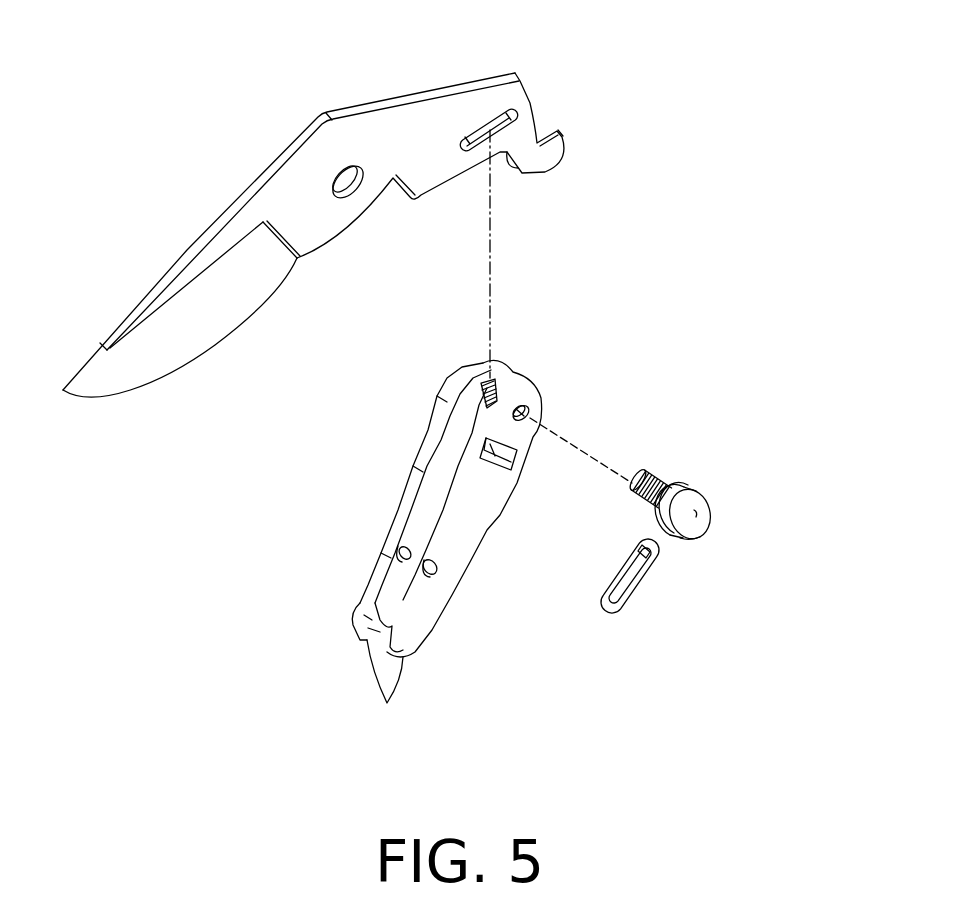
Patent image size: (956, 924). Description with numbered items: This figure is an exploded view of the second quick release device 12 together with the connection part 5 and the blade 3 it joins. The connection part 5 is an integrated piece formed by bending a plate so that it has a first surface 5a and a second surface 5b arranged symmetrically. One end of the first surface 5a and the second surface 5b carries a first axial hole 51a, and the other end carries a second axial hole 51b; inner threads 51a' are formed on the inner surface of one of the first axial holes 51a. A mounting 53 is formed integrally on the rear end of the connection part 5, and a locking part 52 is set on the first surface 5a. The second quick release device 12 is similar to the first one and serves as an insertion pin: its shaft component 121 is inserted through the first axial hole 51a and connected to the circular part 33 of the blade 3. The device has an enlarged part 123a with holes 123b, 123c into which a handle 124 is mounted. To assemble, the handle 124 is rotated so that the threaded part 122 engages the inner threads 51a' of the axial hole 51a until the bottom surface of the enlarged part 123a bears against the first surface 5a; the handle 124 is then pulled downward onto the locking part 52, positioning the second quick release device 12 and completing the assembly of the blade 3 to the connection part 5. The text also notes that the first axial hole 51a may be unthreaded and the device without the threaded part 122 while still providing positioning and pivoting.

The blade 3 is at (313, 203).
The circular part 33 is at (491, 127).
The connection part 5 is at (466, 513).
The first surface 5a is at (467, 553).
The second surface 5b is at (420, 468).
The first axial hole 51a is at (550, 373).
The inner threads 51a' is at (514, 352).
The second axial hole 51b is at (430, 558).
The locking part 52 is at (515, 463).
The mounting 53 is at (377, 666).
The second quick release device 12 is at (659, 553).
The shaft component 121 is at (677, 487).
The threaded part 122 is at (632, 503).
The enlarged part 123a is at (700, 537).
The hole 123b is at (673, 487).
The hole 123c is at (708, 513).
The handle 124 is at (600, 630).